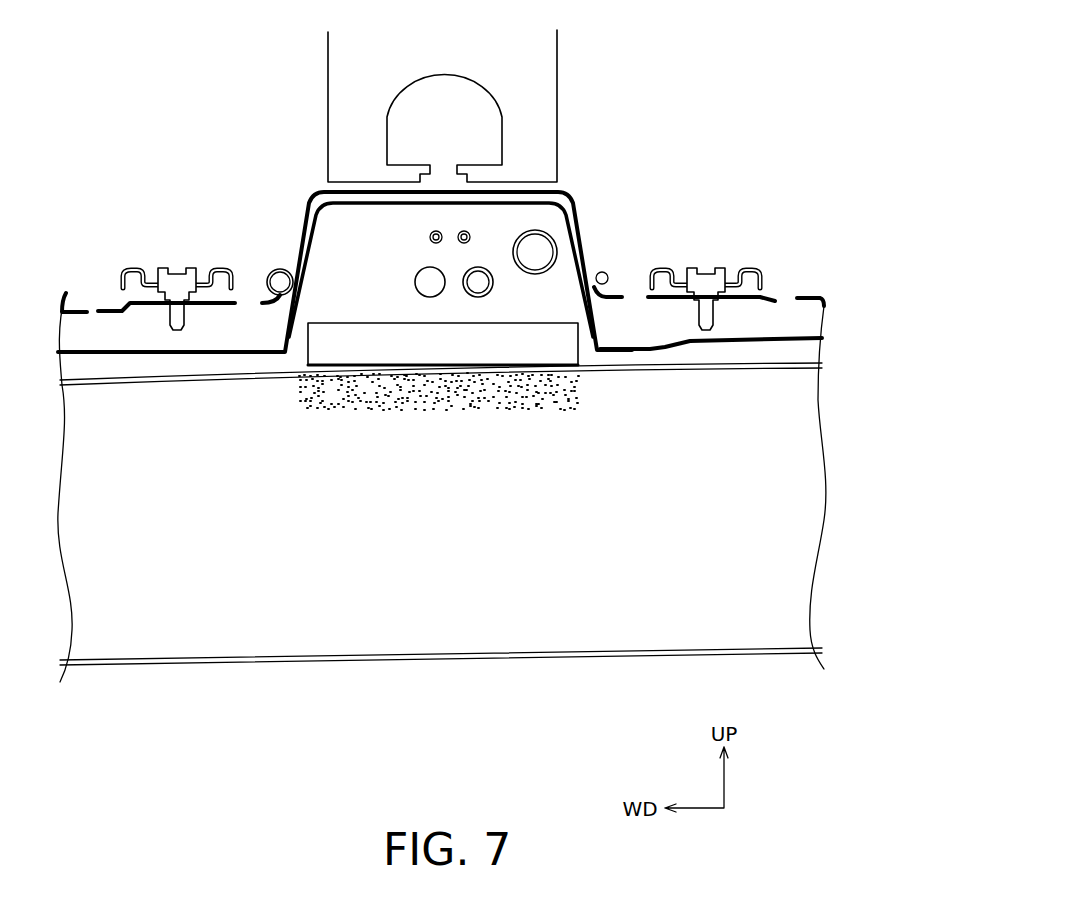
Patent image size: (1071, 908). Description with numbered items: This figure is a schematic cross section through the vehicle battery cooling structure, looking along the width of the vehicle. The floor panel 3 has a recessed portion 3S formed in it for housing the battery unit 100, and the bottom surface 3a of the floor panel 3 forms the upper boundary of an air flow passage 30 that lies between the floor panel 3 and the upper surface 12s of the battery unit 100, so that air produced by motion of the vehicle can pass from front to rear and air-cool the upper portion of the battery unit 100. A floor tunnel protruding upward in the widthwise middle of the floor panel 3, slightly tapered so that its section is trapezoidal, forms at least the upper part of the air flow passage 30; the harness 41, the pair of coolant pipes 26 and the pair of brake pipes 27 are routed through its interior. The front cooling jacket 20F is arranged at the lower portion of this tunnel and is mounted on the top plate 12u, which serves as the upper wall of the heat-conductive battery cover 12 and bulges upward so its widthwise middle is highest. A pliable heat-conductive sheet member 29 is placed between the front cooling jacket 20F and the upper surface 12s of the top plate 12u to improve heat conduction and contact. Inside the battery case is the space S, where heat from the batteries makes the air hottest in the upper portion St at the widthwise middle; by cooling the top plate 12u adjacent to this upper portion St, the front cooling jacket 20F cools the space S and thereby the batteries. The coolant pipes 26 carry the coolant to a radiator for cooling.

The floor panel 3 is at (810, 338).
The bottom surface of the floor panel 3a is at (346, 213).
The recessed portion 3S is at (118, 367).
The battery cover 12 is at (737, 353).
The top plate 12u is at (174, 380).
The upper surface of the battery unit 12s is at (527, 354).
The front cooling jacket 20F is at (363, 314).
The coolant pipes 26 is at (430, 297).
The brake pipes 27 is at (464, 230).
The heat-conductive sheet member 29 is at (478, 297).
The air flow passage 30 is at (247, 365).
The harness 41 is at (555, 241).
The battery unit 100 is at (306, 679).
The space S is at (796, 406).
The upper portion of the space St is at (341, 430).